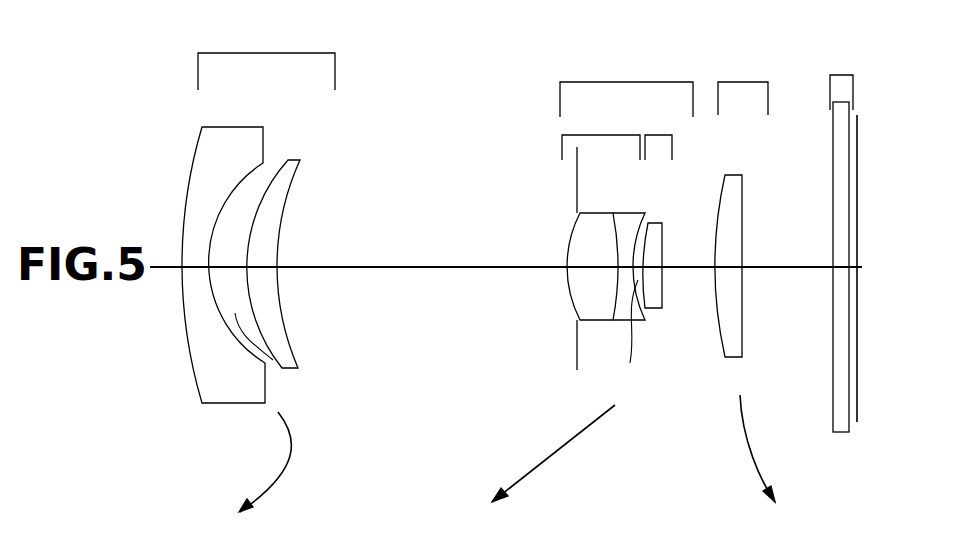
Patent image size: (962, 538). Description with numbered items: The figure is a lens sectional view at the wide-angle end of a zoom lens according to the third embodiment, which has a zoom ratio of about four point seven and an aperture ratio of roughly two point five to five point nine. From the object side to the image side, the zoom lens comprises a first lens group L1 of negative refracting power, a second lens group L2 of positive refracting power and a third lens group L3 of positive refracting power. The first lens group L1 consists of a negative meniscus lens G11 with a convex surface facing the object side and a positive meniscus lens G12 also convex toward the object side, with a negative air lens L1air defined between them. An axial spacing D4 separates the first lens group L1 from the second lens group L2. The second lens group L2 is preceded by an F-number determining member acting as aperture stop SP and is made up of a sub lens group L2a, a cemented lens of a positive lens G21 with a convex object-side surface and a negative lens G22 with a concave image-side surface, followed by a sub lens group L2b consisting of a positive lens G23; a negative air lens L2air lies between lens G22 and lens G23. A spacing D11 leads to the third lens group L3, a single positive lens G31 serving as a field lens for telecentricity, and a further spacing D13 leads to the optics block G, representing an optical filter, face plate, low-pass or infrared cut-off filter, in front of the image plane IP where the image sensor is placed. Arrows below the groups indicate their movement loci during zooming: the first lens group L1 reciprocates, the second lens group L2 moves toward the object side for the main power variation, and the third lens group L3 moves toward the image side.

The first lens group L1 is at (266, 59).
The negative lens G11 is at (217, 158).
The positive lens G12 is at (287, 173).
The air lens L1air is at (280, 356).
The distance between first and second lens units D4 is at (408, 268).
The second lens group L2 is at (626, 84).
The sub lens group (2a) L2a is at (601, 133).
The sub lens group (2b) L2b is at (662, 133).
The aperture stop SP is at (575, 165).
The positive lens G21 is at (590, 237).
The negative lens G22 is at (633, 222).
The positive lens G23 is at (655, 227).
The air lens L2air is at (617, 336).
The distance between second and third lens units D11 is at (692, 268).
The third lens group L3 is at (743, 83).
The positive lens G31 is at (732, 185).
The distance between third lens unit and glass block D13 is at (782, 268).
The optics block G is at (841, 240).
The image plane IP is at (857, 143).